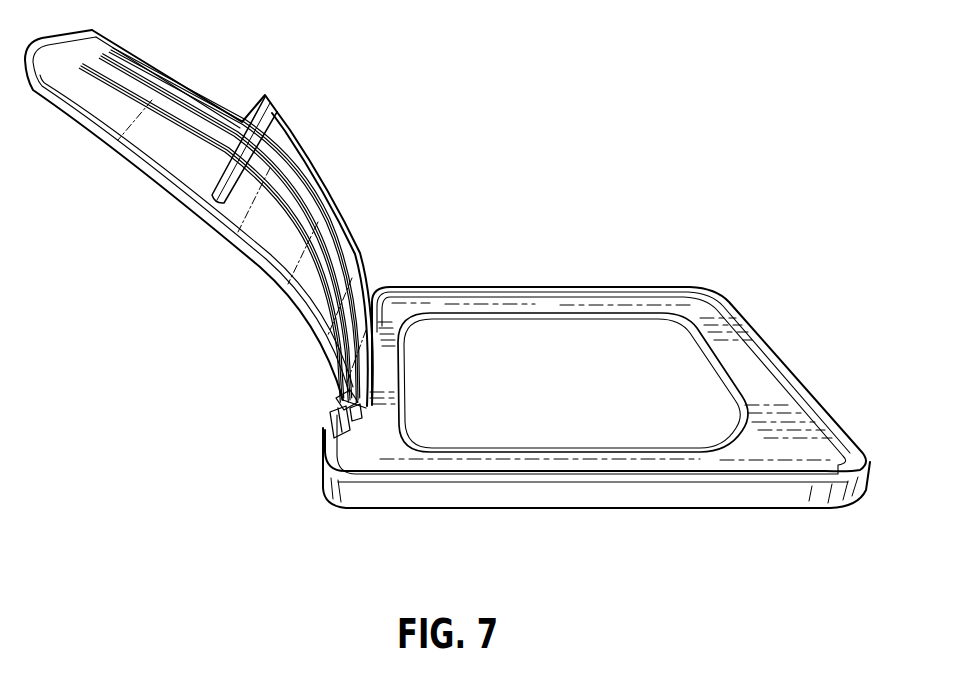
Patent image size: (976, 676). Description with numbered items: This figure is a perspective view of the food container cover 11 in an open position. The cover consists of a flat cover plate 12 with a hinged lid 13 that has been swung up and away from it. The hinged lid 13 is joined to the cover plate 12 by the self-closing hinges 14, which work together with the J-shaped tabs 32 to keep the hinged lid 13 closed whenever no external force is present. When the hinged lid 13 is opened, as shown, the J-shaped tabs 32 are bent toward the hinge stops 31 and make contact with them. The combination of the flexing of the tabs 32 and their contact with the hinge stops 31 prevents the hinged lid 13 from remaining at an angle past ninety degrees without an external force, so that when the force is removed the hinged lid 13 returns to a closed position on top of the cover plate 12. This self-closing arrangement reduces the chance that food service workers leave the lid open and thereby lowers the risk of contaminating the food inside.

The food container cover 11 is at (637, 242).
The cover plate 12 is at (495, 287).
The hinged lid 13 is at (308, 148).
The self-closing hinges 14 is at (337, 421).
The hinge stops 31 is at (340, 394).
The J-shaped tabs 32 is at (350, 414).